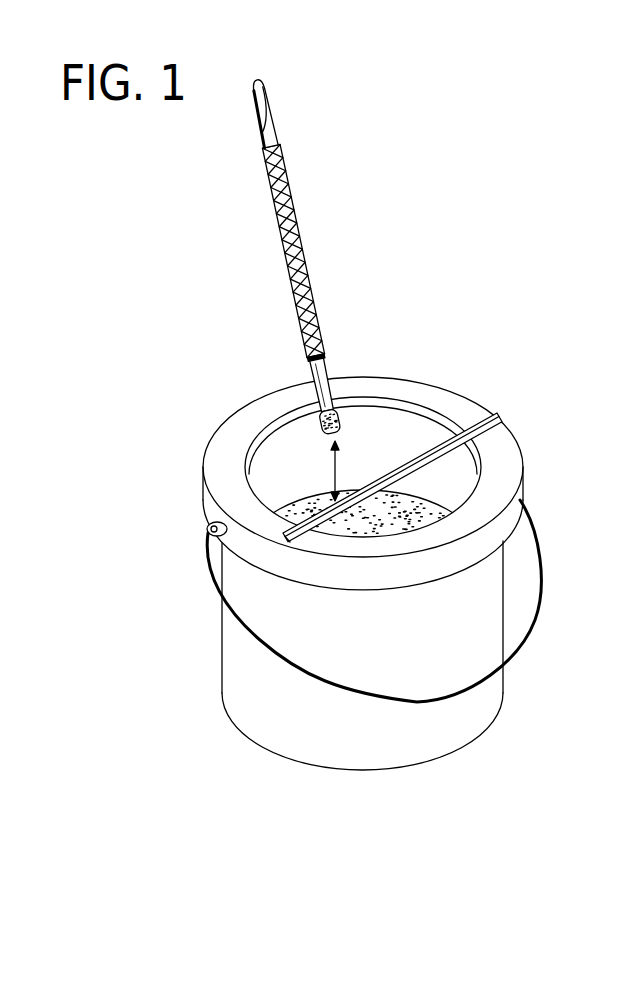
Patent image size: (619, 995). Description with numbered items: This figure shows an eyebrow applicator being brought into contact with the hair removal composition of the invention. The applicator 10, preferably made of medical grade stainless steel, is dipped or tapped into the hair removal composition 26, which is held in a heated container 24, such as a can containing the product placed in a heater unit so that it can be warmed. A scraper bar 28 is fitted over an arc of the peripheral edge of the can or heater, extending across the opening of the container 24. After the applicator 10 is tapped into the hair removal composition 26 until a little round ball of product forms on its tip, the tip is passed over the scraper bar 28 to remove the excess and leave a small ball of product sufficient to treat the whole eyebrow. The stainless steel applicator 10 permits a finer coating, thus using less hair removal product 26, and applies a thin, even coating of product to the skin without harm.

The applicator 10 is at (319, 256).
The heated container 24 is at (438, 380).
The hair removal composition 26 is at (308, 428).
The scraper bar 28 is at (424, 457).